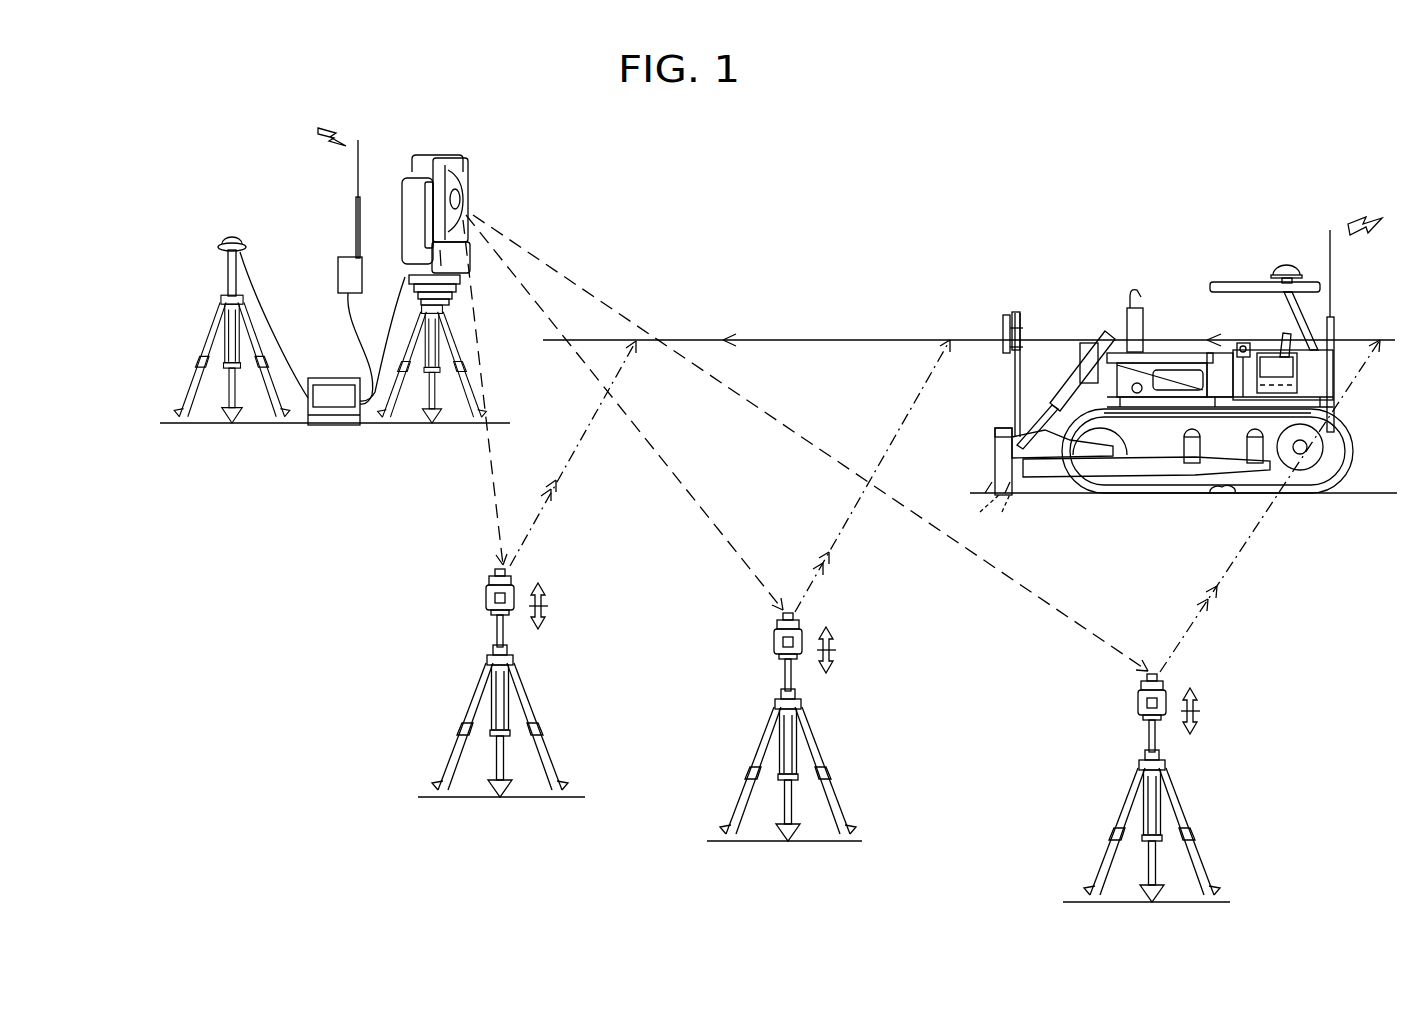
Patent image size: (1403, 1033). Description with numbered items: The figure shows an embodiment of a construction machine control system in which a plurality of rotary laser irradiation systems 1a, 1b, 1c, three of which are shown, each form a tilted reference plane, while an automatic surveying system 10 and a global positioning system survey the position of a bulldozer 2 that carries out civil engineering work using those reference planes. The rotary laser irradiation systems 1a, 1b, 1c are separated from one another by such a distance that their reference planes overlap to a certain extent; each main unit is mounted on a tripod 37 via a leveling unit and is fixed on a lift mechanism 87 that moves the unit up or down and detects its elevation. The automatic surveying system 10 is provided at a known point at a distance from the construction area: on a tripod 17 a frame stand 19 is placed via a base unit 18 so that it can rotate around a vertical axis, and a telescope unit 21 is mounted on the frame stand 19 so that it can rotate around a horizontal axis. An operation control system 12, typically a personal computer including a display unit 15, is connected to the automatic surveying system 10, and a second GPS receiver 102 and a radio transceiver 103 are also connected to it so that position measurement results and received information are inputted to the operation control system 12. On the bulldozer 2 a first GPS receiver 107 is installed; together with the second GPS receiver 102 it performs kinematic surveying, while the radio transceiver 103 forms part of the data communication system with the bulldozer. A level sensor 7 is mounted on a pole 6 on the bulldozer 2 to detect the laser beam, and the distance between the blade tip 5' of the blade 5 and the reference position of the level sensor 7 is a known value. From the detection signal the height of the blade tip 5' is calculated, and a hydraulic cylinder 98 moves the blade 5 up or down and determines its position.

The rotary laser irradiation system 1a is at (517, 648).
The rotary laser irradiation system 1b is at (808, 695).
The rotary laser irradiation system 1c is at (1171, 753).
The bulldozer 2 is at (1171, 293).
The blade 5 is at (972, 451).
The blade tip 5' is at (967, 491).
The pole 6 is at (1014, 376).
The level sensor 7 is at (1016, 312).
The automatic surveying system 10 is at (469, 150).
The operation control system 12 is at (328, 369).
The display unit 15 is at (337, 400).
The tripod 17 is at (465, 348).
The base unit 18 is at (455, 290).
The frame stand 19 is at (413, 203).
The telescope unit 21 is at (462, 180).
The tripod 37 is at (540, 720).
The lift mechanism 87 is at (491, 635).
The hydraulic cylinder 98 is at (1058, 405).
The second GPS receiver 102 is at (233, 241).
The radio transceiver 103 is at (340, 262).
The first GPS receiver 107 is at (1287, 262).